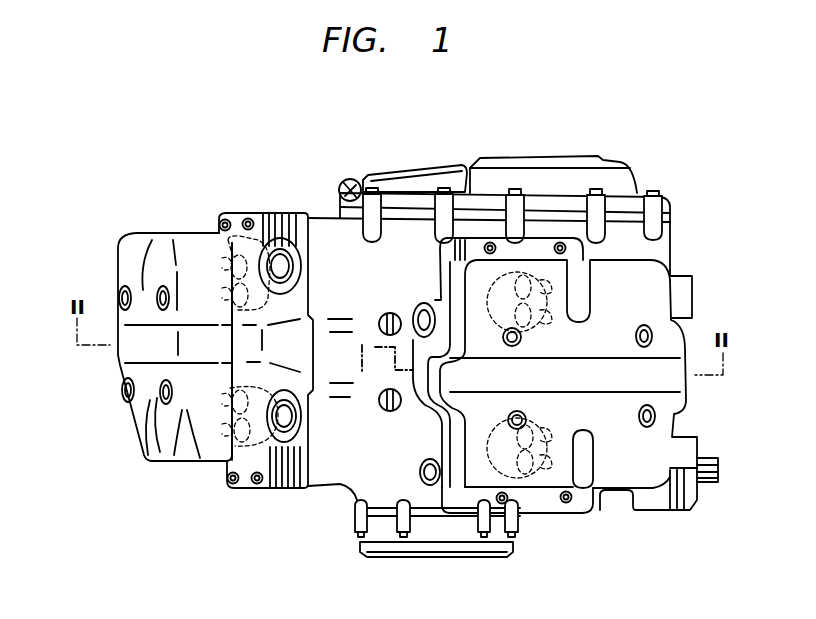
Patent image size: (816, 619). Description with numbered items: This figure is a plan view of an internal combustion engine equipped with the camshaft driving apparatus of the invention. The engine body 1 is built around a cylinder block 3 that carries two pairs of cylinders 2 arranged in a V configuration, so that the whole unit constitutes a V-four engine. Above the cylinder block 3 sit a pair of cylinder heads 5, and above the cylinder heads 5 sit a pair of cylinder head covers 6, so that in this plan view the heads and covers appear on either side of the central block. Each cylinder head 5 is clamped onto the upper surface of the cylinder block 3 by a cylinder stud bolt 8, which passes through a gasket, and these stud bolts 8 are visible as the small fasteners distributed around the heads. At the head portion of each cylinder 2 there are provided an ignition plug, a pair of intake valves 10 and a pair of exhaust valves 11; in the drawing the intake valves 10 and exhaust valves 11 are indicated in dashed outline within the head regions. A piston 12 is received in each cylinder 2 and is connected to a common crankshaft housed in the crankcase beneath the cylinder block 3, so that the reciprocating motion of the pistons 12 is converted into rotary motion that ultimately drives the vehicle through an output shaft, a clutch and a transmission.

The engine body 1 is at (402, 160).
The cylinder 2 is at (312, 213).
The cylinder block 3 is at (350, 233).
The cylinder head 5 is at (240, 213).
The cylinder head cover 6 is at (181, 463).
The cylinder stud bolt 8 is at (222, 222).
The intake valve 10 is at (300, 284).
The exhaust valve 11 is at (222, 292).
The piston 12 is at (228, 240).